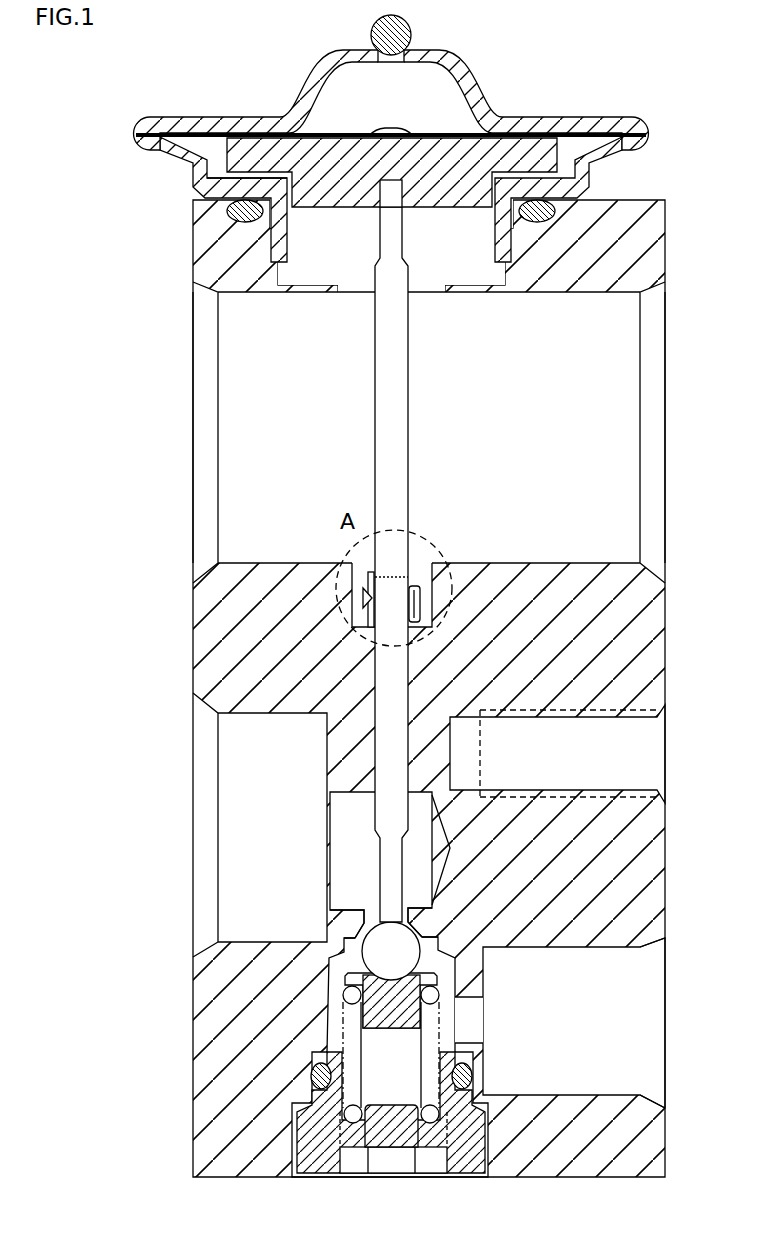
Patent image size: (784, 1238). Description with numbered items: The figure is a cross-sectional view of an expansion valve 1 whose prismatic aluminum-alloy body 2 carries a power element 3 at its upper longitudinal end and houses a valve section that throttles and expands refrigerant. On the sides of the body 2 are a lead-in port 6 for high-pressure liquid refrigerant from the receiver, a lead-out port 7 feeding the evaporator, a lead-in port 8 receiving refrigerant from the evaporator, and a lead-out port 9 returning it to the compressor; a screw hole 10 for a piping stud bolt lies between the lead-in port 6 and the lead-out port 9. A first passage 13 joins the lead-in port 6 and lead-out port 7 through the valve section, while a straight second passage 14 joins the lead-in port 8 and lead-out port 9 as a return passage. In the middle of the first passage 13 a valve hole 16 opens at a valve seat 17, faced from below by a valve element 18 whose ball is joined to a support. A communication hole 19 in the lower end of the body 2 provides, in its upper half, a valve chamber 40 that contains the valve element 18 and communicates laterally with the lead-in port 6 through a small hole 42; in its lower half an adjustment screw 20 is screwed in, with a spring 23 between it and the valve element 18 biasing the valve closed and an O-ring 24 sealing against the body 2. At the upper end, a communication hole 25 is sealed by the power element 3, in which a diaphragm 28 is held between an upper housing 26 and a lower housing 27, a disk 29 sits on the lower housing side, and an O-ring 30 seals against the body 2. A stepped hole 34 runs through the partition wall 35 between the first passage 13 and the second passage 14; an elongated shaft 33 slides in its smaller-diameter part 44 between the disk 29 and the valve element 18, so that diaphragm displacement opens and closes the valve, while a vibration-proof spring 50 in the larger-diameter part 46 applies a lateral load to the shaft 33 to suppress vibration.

The expansion valve 1 is at (584, 104).
The body 2 is at (665, 246).
The power element 3 is at (497, 108).
The lead-in port 6 is at (667, 1000).
The lead-out port 7 is at (208, 780).
The lead-in port 8 is at (203, 400).
The lead-out port 9 is at (667, 350).
The screw hole 10 is at (667, 703).
The first passage 13 is at (603, 1010).
The second passage 14 is at (610, 403).
The valve hole 16 is at (370, 912).
The valve seat 17 is at (423, 930).
The valve element 18 is at (362, 945).
The communication hole 19 is at (330, 1017).
The adjustment screw 20 is at (490, 1143).
The spring 23 is at (332, 1028).
The O-ring 24 is at (310, 1077).
The communication hole 25 is at (440, 286).
The upper housing 26 is at (212, 116).
The lower housing 27 is at (182, 170).
The diaphragm 28 is at (583, 133).
The disk 29 is at (222, 172).
The O-ring 30 is at (225, 208).
The shaft 33 is at (408, 508).
The stepped hole 34 is at (116, 606).
The partition wall 35 is at (440, 565).
The valve chamber 40 is at (337, 972).
The small hole 42 is at (470, 1027).
The smaller-diameter part 44 is at (378, 668).
The larger-diameter part 46 is at (358, 610).
The vibration-proof spring 50 is at (360, 602).